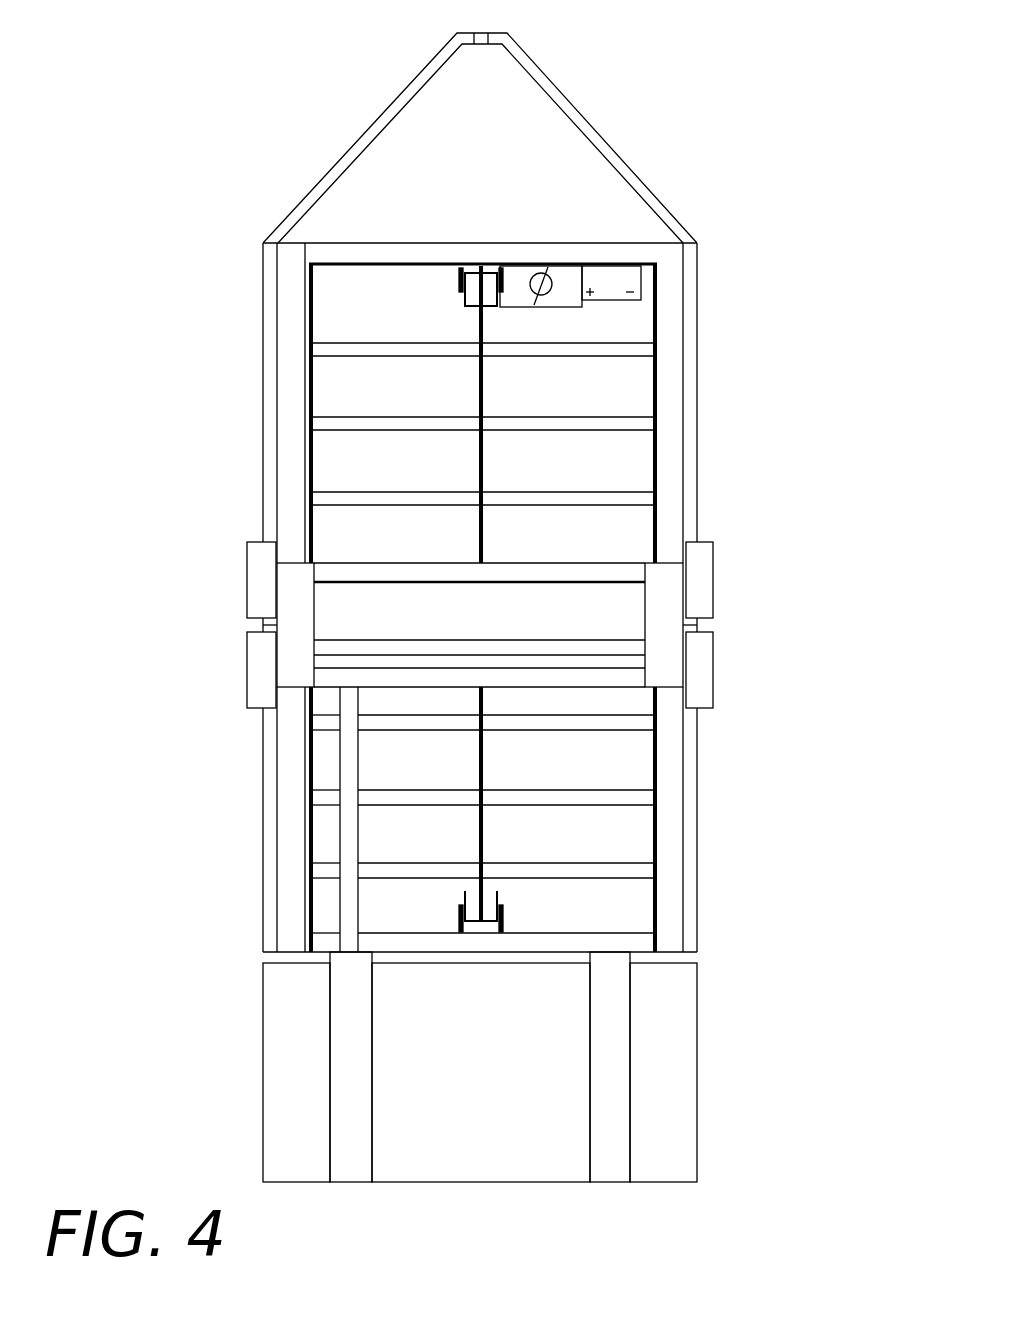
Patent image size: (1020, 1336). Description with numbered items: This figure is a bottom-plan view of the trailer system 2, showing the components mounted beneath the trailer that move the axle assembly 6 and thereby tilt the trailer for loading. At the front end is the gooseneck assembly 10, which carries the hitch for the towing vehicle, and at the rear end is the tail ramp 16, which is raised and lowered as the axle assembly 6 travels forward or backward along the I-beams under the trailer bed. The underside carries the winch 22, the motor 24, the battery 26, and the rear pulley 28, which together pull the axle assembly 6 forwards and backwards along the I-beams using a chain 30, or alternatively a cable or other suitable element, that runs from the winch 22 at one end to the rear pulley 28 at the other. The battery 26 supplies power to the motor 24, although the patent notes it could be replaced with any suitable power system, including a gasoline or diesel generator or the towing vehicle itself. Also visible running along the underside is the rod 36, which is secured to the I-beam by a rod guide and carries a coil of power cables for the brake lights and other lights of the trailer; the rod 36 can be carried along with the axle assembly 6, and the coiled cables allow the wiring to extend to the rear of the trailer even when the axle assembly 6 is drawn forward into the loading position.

The trailer system 2 is at (775, 96).
The gooseneck assembly 10 is at (587, 96).
The axle assembly 6 is at (740, 650).
The tail ramp 16 is at (500, 1086).
The winch 22 is at (479, 265).
The motor 24 is at (563, 265).
The battery 26 is at (608, 265).
The rear pulley 28 is at (500, 903).
The chain 30 is at (484, 378).
The rod 36 is at (313, 472).